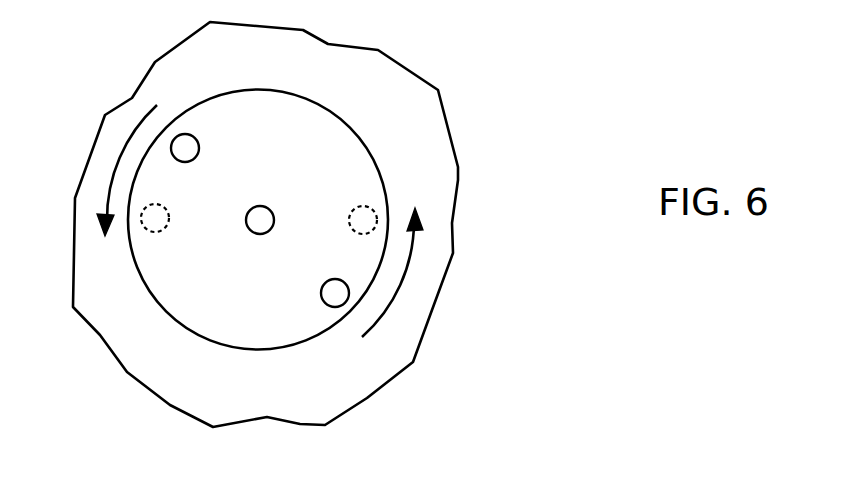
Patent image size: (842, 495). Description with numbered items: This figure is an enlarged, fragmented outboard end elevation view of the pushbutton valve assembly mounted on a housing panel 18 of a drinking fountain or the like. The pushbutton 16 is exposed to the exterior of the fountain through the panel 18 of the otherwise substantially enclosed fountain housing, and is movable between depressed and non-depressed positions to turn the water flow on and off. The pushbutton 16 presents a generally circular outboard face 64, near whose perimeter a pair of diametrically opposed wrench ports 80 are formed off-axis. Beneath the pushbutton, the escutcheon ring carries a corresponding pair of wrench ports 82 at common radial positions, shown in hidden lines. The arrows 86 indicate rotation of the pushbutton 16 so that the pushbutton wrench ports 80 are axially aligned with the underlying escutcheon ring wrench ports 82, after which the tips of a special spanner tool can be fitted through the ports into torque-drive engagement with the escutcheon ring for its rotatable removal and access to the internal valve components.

The pushbutton 16 is at (375, 153).
The panel 18 is at (390, 75).
The circular outboard face 64 is at (250, 318).
The wrench ports 80 is at (199, 145).
The wrench ports 82 is at (160, 231).
The arrows 86 is at (117, 158).